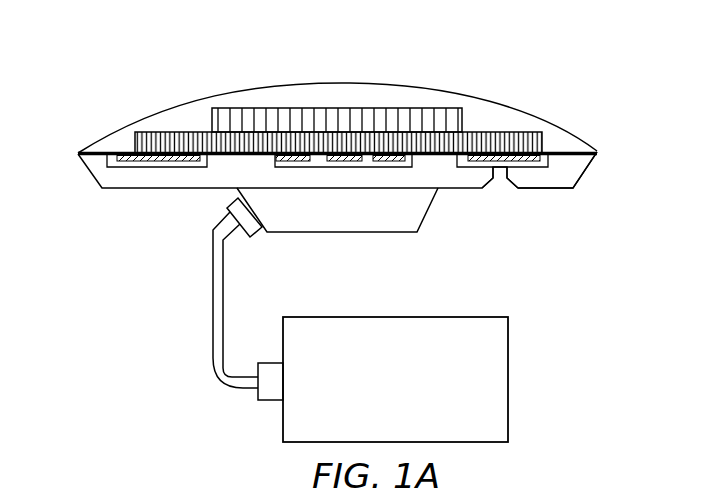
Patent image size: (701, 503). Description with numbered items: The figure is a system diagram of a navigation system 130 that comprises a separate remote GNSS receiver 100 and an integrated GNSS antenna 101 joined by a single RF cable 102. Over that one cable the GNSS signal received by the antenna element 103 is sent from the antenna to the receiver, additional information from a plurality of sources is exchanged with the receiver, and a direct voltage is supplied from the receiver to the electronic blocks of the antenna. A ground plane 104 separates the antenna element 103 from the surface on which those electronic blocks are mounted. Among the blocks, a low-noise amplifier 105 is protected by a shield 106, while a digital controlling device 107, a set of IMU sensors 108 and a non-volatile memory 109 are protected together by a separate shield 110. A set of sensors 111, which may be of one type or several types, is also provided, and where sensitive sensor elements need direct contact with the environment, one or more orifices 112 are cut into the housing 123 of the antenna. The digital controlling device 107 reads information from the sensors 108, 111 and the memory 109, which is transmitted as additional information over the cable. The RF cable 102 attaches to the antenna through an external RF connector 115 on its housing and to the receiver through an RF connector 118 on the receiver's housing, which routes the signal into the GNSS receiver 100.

The remote GNSS receiver 100 is at (510, 374).
The integrated GNSS antenna 101 is at (207, 168).
The RF cable 102 is at (212, 318).
The antenna element 103 is at (198, 131).
The ground plane 104 is at (93, 155).
The low-noise amplifier (LNA) 105 is at (107, 158).
The shield 106 is at (133, 168).
The digital controlling device 107 is at (277, 158).
The IMU sensors 108 is at (335, 157).
The non-volatile memory 109 is at (383, 158).
The shield 110 is at (400, 168).
The set of sensors 111 is at (495, 157).
The orifices 112 is at (500, 180).
The external RF connector 115 is at (248, 236).
The RF connector 118 is at (265, 362).
The housing 123 is at (563, 189).
The navigation system 130 is at (470, 68).